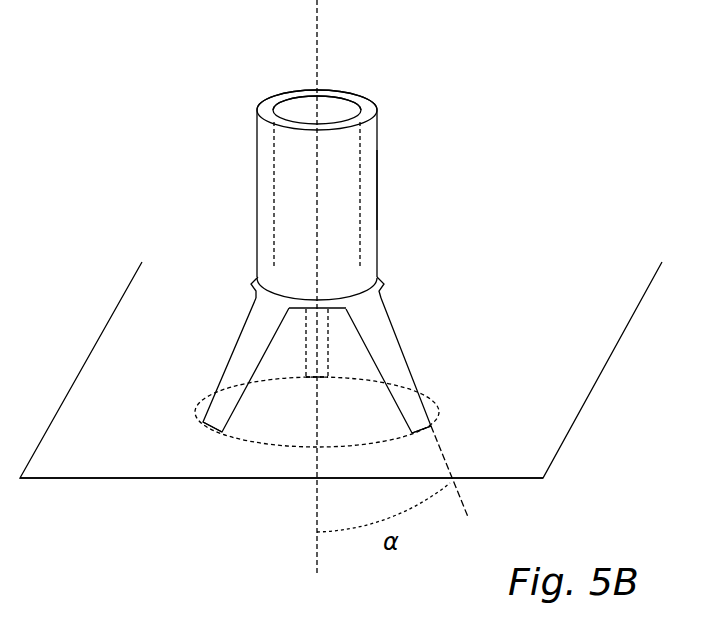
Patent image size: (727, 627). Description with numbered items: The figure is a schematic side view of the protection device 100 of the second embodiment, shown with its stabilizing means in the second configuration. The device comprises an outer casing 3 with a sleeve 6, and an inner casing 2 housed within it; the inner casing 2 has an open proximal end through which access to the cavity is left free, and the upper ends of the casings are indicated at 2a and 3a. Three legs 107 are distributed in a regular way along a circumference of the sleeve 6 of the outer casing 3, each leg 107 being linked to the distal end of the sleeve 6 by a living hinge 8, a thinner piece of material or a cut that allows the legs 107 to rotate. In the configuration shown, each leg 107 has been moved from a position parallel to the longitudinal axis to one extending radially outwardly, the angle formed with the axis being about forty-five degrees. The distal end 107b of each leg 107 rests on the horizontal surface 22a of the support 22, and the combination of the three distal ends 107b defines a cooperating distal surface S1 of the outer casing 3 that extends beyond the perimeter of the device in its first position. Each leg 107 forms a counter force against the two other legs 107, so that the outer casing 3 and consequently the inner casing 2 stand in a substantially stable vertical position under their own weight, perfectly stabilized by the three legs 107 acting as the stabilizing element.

The protection device 100 is at (483, 146).
The inner casing 2 is at (272, 184).
The upper opening of inner tube 2a is at (335, 105).
The outer casing 3 is at (387, 212).
The upper end of outer sleeve 3a is at (378, 97).
The sleeve 6 is at (379, 182).
The living hinge 8 is at (254, 281).
The leg 107 is at (247, 352).
The distal end 107b is at (574, 471).
The support 22 is at (597, 392).
The horizontal surface 22a is at (281, 440).
The cooperating distal surface S1 is at (317, 412).